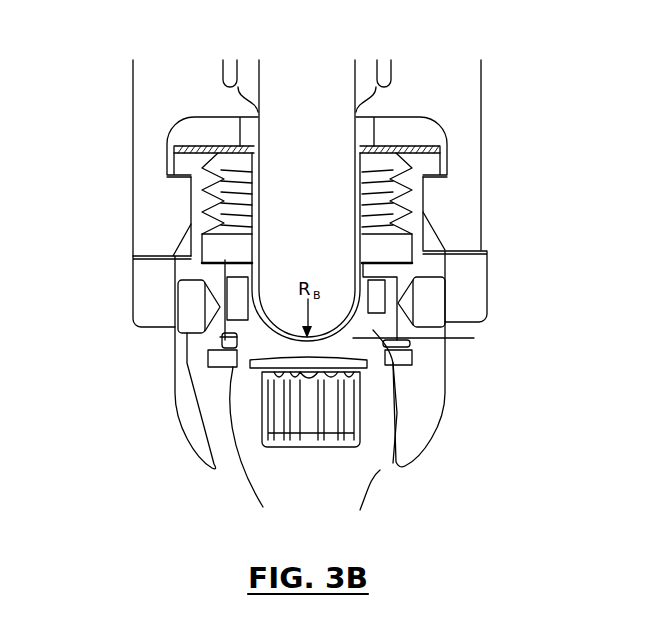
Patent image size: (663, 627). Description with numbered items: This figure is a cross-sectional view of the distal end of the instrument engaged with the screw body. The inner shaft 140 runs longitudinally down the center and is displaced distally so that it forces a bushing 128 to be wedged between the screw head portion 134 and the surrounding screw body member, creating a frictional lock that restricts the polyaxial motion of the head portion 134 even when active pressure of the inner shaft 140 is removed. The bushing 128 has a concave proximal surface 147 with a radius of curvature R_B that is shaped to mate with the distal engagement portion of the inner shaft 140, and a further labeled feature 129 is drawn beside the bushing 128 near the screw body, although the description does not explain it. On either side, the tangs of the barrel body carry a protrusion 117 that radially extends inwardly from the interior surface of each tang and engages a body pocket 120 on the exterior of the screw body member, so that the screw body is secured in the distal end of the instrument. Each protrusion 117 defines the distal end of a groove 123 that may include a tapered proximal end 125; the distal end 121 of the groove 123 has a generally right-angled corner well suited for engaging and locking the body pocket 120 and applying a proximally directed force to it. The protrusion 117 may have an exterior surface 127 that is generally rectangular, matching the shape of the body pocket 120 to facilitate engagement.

The protrusion 117 is at (465, 222).
The body pocket 120 is at (413, 183).
The distal end of the groove 121 is at (452, 152).
The groove 123 is at (435, 117).
The tapered proximal end 125 is at (370, 100).
The exterior surface 127 is at (178, 191).
The bushing 128 is at (474, 338).
The retainer 129 is at (412, 357).
The head portion 134 is at (372, 472).
The inner shaft 140 is at (298, 82).
The concave proximal surface 147 is at (278, 332).